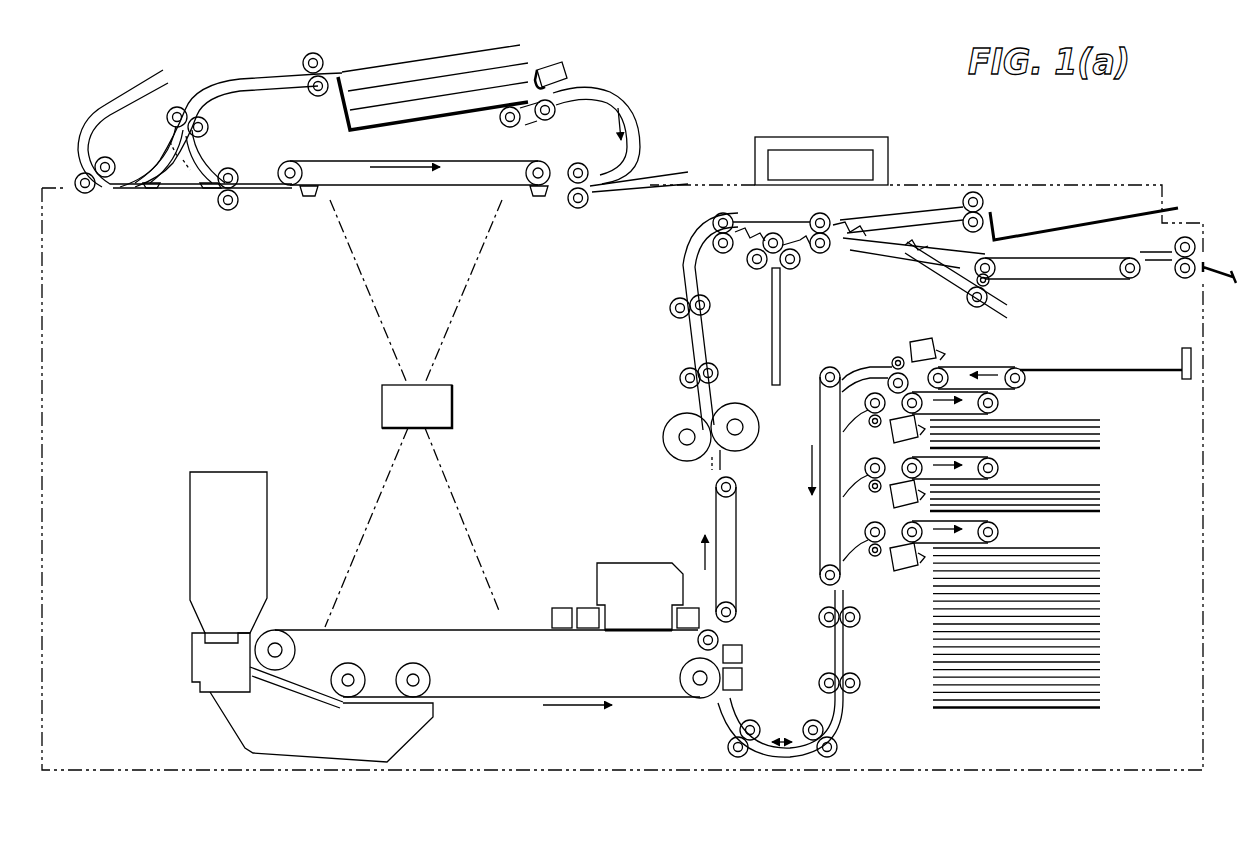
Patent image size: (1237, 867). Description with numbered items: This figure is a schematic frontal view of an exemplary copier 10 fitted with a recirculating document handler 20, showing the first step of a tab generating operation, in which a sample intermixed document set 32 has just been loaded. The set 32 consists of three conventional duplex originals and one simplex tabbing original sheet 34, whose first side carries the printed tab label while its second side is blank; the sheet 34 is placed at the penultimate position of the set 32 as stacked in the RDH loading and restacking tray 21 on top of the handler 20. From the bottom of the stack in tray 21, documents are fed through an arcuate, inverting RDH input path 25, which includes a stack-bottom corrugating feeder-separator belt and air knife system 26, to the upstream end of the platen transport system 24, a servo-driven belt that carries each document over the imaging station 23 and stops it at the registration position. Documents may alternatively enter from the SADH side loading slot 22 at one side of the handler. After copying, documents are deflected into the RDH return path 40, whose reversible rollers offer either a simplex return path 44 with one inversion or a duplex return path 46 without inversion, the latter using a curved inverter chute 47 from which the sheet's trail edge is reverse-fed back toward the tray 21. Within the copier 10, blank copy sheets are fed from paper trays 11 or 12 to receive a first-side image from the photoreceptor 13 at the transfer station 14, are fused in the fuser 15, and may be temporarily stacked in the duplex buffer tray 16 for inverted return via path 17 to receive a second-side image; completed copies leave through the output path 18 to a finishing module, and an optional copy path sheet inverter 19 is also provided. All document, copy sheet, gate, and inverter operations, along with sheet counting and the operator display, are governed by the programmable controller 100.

The copier 10 is at (1148, 147).
The paper tray 11 is at (1073, 449).
The paper tray 12 is at (1063, 510).
The photoreceptor 13 is at (520, 628).
The transfer station 14 is at (760, 663).
The fuser 15 is at (678, 442).
The duplex buffer tray 16 is at (1130, 372).
The return path 17 is at (862, 373).
The output path 18 is at (1213, 252).
The copy path sheet inverter 19 is at (775, 293).
The recirculating document handler 20 is at (620, 70).
The loading and restacking tray 21 is at (360, 128).
The SADH side loading slot 22 is at (665, 183).
The imaging station 23 is at (305, 215).
The platen transport system 24 is at (493, 160).
The RDH input path 25 is at (632, 120).
The corrugating feeder-separator belt and air knife system 26 is at (503, 120).
The document set 32 is at (367, 38).
The tabbing original sheet 34 is at (485, 85).
The RDH return path 40 is at (210, 92).
The simplex return path 44 is at (210, 177).
The duplex return path 46 is at (153, 173).
The inverter chute 47 is at (105, 105).
The controller 100 is at (887, 157).